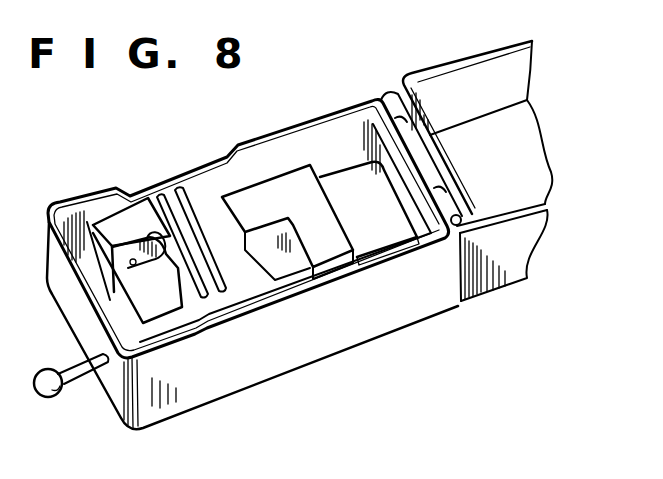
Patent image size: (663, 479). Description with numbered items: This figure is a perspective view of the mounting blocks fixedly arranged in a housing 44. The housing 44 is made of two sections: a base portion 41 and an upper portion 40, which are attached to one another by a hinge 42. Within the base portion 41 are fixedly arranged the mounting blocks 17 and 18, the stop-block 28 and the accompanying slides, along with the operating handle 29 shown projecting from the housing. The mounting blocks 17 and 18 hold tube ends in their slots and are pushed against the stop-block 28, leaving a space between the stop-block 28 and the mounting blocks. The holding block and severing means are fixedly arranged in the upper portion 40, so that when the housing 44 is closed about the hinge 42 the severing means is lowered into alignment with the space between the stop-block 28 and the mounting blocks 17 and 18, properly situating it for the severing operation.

The mounting block 17 is at (110, 222).
The mounting block 18 is at (177, 290).
The stop-block 28 is at (267, 187).
The operating handle 29 is at (55, 397).
The upper portion 40 is at (471, 58).
The base portion 41 is at (360, 97).
The hinge 42 is at (462, 192).
The housing 44 is at (416, 296).